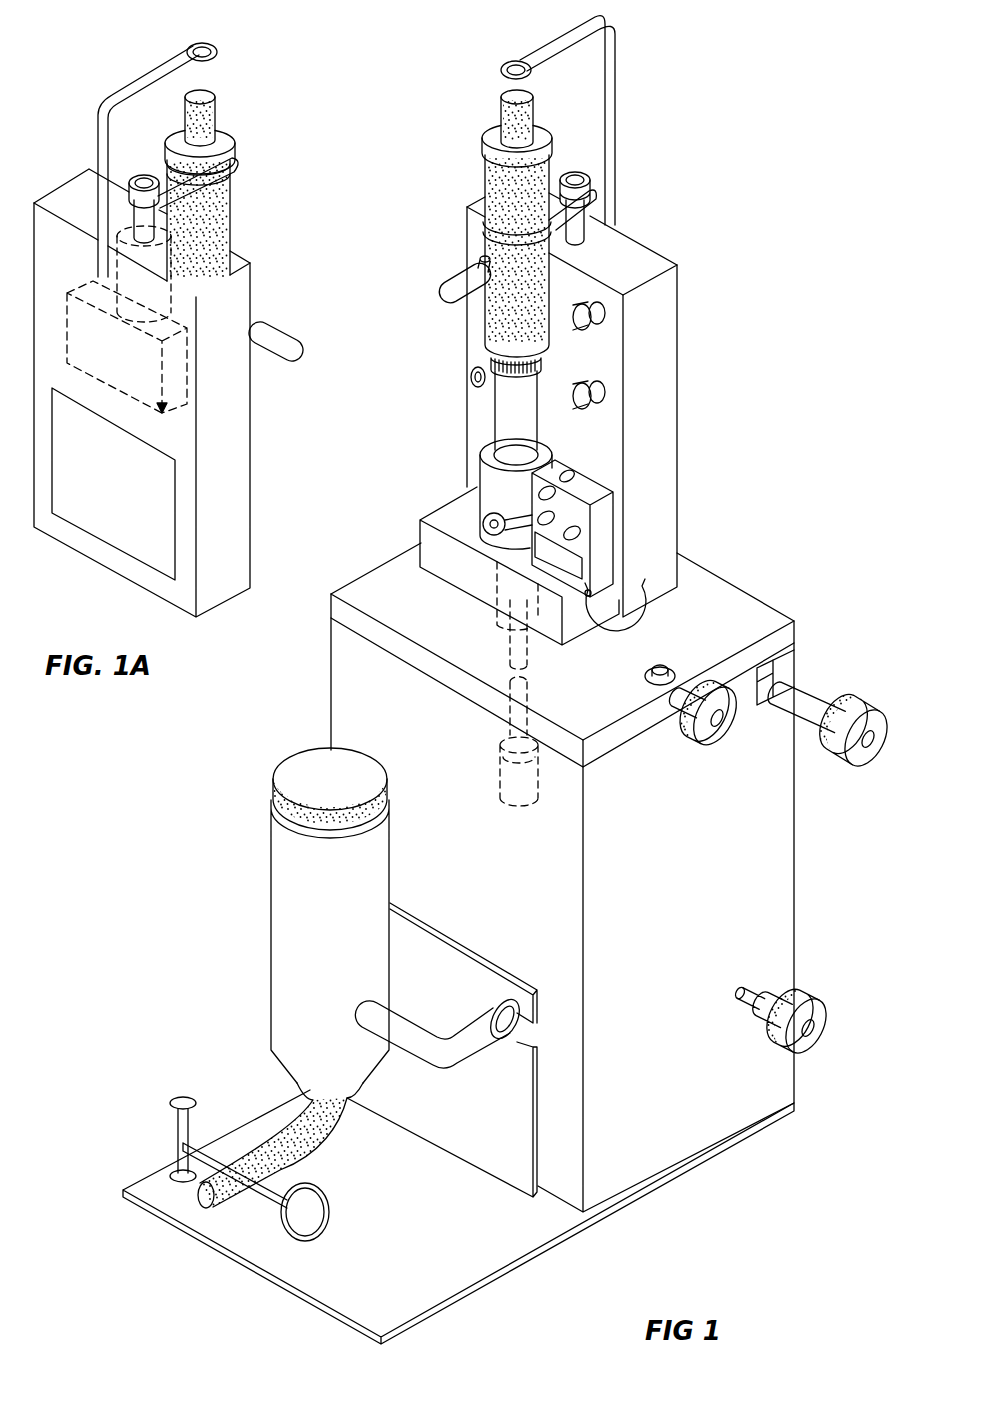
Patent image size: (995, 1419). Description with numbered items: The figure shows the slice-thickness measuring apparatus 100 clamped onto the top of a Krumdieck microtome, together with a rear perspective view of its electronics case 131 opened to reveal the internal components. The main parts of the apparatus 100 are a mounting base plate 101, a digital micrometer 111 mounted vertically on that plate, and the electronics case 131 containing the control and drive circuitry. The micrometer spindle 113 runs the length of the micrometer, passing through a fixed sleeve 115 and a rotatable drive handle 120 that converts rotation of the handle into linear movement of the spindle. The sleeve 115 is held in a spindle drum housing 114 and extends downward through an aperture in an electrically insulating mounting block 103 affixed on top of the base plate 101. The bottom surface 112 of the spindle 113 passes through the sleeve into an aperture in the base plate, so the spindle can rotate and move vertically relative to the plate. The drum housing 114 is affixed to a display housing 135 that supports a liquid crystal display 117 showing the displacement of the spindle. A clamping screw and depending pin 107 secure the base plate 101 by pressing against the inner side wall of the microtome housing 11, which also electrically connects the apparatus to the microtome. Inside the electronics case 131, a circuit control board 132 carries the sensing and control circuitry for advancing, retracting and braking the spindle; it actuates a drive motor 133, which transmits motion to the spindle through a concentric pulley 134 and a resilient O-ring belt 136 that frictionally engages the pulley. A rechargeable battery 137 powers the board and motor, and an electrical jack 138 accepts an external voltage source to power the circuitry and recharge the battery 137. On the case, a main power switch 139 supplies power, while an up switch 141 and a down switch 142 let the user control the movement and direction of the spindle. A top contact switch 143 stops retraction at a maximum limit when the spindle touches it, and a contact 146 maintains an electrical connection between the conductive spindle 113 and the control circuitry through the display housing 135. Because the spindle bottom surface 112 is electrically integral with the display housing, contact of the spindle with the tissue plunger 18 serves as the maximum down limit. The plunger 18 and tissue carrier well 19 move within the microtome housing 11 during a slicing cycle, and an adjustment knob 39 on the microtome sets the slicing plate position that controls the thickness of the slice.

In FIG. 1, the microtome housing 11 is at (790, 929).
In FIG. 1, the tissue plunger 18 is at (522, 690).
In FIG. 1, the tissue carrier well 19 is at (500, 770).
In FIG. 1, the adjustment knob 39 is at (857, 705).
In FIG. 1, the apparatus 100 is at (695, 438).
In FIG. 1, the mounting base plate 101 is at (752, 612).
In FIG. 1, the electrically insulating mounting block 103 is at (442, 518).
In FIG. 1, the clamping screw and depending pin 107 is at (662, 670).
In FIG. 1A, the digital micrometer 111 is at (237, 142).
In FIG. 1, the digital micrometer 111 is at (484, 175).
In FIG. 1, the spindle bottom surface 112 is at (510, 657).
In FIG. 1A, the micrometer spindle 113 is at (203, 135).
In FIG. 1, the micrometer spindle 113 is at (512, 134).
In FIG. 1, the spindle drum housing 114 is at (492, 477).
In FIG. 1, the fixed sleeve 115 is at (509, 416).
In FIG. 1, the liquid crystal display 117 is at (589, 590).
In FIG. 1A, the rotatable drive handle 120 is at (228, 218).
In FIG. 1, the rotatable drive handle 120 is at (503, 316).
In FIG. 1A, the electronics case 131 is at (222, 467).
In FIG. 1, the electronics case 131 is at (640, 268).
In FIG. 1A, the circuit control board 132 is at (113, 525).
In FIG. 1A, the drive motor 133 is at (172, 264).
In FIG. 1A, the concentric pulley 134 is at (143, 176).
In FIG. 1, the concentric pulley 134 is at (586, 174).
In FIG. 1, the display housing 135 is at (605, 509).
In FIG. 1A, the resilient O-ring belt 136 is at (236, 168).
In FIG. 1, the resilient O-ring belt 136 is at (592, 204).
In FIG. 1A, the rechargeable battery 137 is at (107, 350).
In FIG. 1, the electrical jack 138 is at (470, 378).
In FIG. 1A, the main power switch 139 is at (283, 333).
In FIG. 1, the main power switch 139 is at (446, 294).
In FIG. 1, the up switch 141 is at (586, 328).
In FIG. 1, the down switch 142 is at (590, 408).
In FIG. 1A, the top contact switch 143 is at (218, 58).
In FIG. 1, the top contact switch 143 is at (503, 66).
In FIG. 1, the contact 146 is at (648, 620).